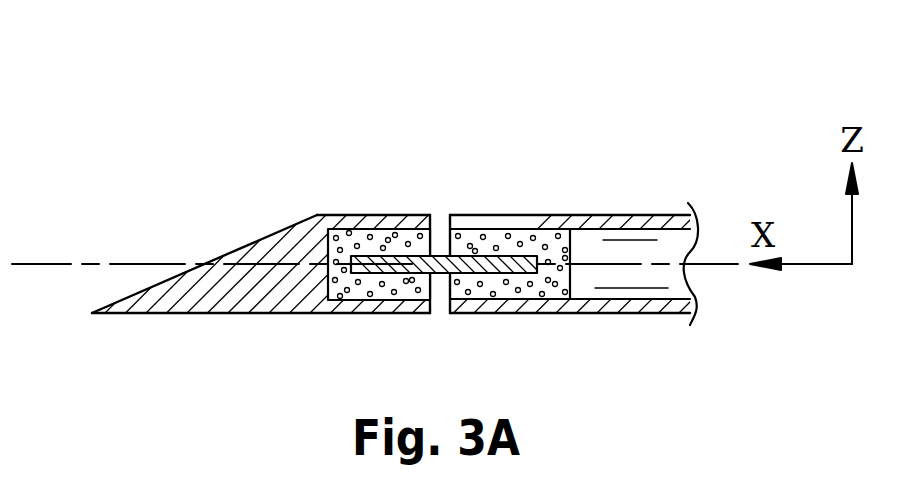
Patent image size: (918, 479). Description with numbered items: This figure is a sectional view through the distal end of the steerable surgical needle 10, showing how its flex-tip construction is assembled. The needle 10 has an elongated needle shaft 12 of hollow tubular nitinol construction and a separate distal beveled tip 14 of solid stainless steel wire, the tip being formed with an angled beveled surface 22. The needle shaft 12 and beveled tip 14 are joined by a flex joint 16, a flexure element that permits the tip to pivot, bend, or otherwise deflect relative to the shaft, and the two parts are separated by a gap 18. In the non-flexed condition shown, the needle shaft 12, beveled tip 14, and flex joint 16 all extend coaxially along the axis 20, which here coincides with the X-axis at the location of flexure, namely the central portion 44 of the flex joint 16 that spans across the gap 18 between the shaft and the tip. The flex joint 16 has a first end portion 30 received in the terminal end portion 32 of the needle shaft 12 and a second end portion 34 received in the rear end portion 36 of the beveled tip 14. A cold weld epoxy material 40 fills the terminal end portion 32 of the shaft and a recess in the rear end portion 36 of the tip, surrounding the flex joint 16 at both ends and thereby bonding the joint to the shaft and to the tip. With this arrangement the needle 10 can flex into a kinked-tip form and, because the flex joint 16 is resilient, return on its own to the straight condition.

The steerable surgical needle 10 is at (203, 102).
The needle shaft 12 is at (607, 222).
The beveled tip 14 is at (240, 270).
The flex joint 16 is at (488, 257).
The gap 18 is at (443, 302).
The axis 20 is at (50, 265).
The beveled surface 22 is at (183, 272).
The first end portion 30 is at (522, 258).
The terminal end portion 32 is at (492, 308).
The second end portion 34 is at (375, 258).
The rear end portion 36 is at (378, 315).
The cold weld epoxy material 40 is at (467, 243).
The central portion 44 is at (437, 274).